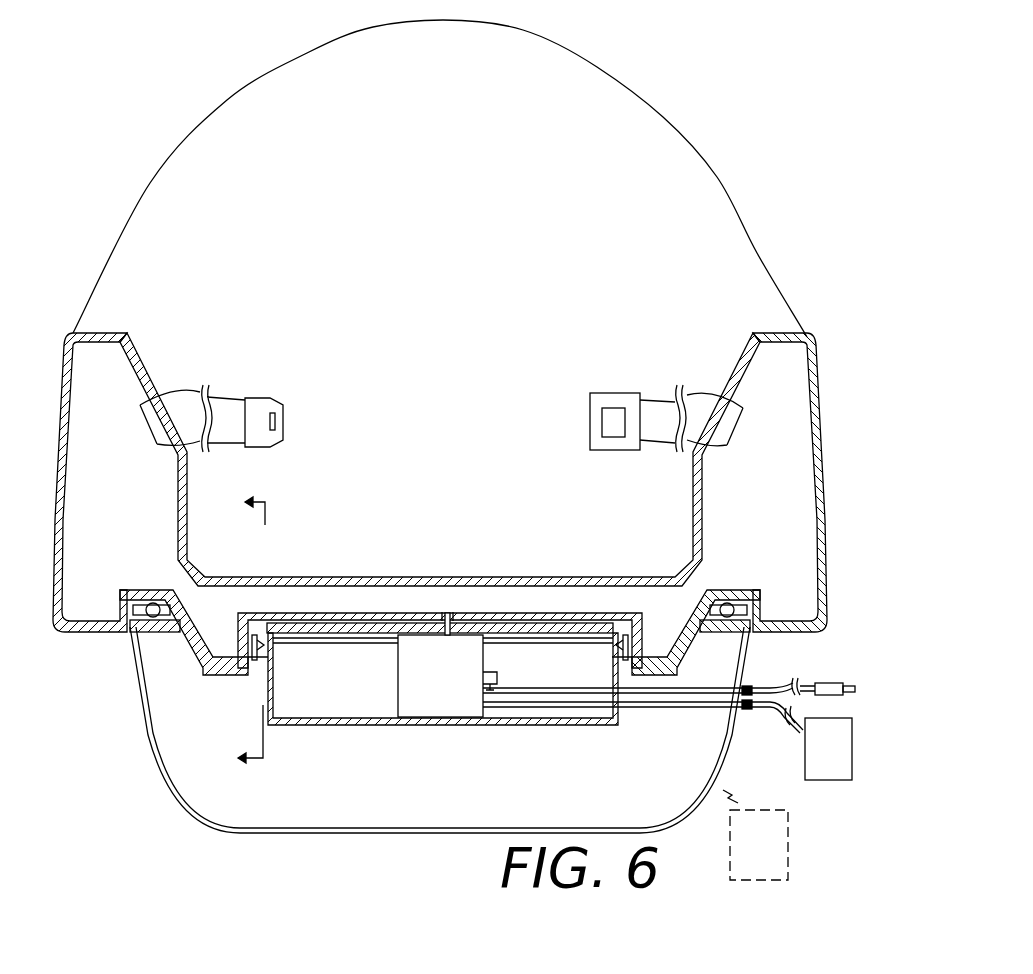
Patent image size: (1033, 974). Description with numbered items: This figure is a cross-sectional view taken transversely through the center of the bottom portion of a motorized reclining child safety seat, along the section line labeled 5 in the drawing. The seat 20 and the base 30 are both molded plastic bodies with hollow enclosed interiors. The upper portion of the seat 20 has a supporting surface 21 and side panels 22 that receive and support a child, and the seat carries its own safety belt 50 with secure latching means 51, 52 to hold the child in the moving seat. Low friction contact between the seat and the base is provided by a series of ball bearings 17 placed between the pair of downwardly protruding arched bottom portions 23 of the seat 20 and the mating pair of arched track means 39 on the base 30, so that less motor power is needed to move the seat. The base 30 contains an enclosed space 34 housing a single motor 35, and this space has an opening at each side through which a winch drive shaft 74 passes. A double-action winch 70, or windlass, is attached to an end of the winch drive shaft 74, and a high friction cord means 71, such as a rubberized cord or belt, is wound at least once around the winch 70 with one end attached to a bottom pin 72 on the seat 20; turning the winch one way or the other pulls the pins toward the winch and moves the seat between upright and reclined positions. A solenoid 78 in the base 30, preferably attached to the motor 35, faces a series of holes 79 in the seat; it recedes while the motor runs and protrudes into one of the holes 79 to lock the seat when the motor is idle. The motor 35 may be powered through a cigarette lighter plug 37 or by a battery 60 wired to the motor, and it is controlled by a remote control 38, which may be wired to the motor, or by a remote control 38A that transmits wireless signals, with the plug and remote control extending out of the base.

The section line 5- 5 is at (239, 631).
The ball bearings 17 is at (133, 612).
The seat 20 is at (660, 115).
The supporting surface 21 is at (405, 577).
The side panels 22 is at (150, 383).
The arched bottom portions 23 is at (170, 592).
The base 30 is at (152, 768).
The enclosed space 34 is at (582, 710).
The motor 35 is at (460, 712).
The cigarette lighter plug 37 is at (669, 667).
The remote control 38 is at (805, 750).
The remote control 38A is at (788, 828).
The arched track means 39 is at (147, 623).
The safety belt 50 is at (217, 397).
The latching means 51 is at (283, 400).
The latching means 52 is at (590, 415).
The battery 60 is at (495, 685).
The double-action winch 70 is at (248, 620).
The high friction cord means 71 is at (240, 657).
The bottom pin 72 is at (263, 663).
The winch drive shaft 74 is at (387, 647).
The solenoid 78 is at (445, 612).
The holes 79 is at (452, 612).